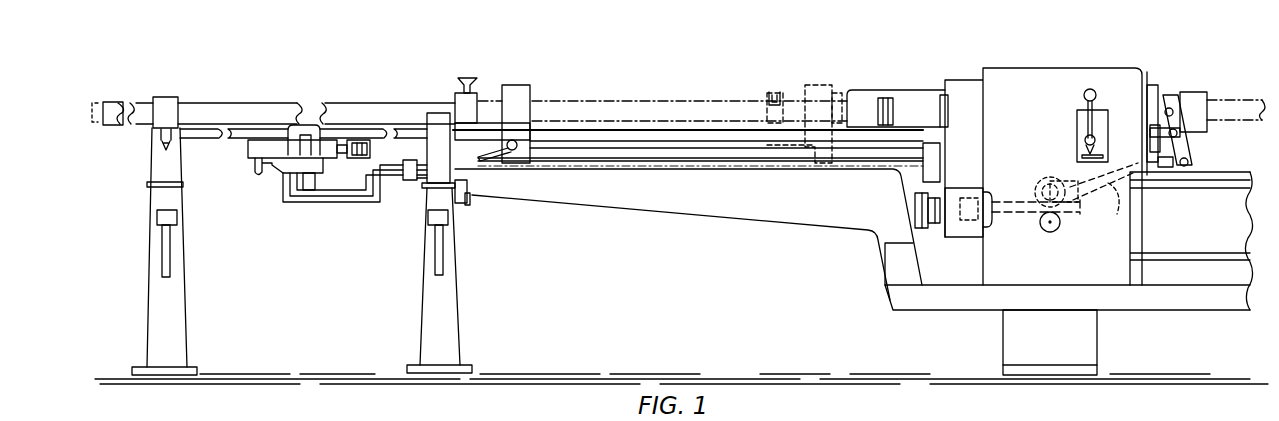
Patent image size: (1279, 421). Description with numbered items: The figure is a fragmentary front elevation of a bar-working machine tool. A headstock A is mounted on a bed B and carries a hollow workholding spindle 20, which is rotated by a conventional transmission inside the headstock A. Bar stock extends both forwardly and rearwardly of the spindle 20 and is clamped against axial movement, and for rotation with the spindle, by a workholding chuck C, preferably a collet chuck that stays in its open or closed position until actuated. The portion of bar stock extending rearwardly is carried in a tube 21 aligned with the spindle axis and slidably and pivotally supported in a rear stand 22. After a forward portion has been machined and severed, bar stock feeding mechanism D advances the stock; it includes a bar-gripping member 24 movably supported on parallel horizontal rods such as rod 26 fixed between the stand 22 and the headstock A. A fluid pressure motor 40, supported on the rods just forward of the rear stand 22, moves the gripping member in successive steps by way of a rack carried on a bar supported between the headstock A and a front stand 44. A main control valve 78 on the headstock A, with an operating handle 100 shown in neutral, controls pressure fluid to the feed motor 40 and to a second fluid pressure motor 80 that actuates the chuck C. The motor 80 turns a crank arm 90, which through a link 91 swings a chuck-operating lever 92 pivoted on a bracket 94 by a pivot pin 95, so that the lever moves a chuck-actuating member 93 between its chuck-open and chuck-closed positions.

The workholding spindle 20 is at (917, 111).
The tube 21 is at (362, 110).
The rear stand 22 is at (167, 316).
The bar-gripping member 24 is at (520, 85).
The support rod 26 is at (587, 155).
The fluid pressure motor 40 is at (248, 150).
The front stand 44 is at (443, 322).
The main control valve 78 is at (1078, 146).
The fluid pressure motor 80 is at (935, 222).
The crank arm 90 is at (1066, 182).
The link 91 is at (1117, 212).
The chuck-operating lever 92 is at (1185, 148).
The chuck-actuating member 93 is at (1175, 102).
The bracket 94 is at (1150, 137).
The pivot pin 95 is at (1198, 138).
The operating handle 100 is at (1096, 97).
The headstock A is at (1010, 79).
The bed B is at (1234, 176).
The workholding chuck C is at (1202, 101).
The bar stock feeding mechanism D is at (518, 94).